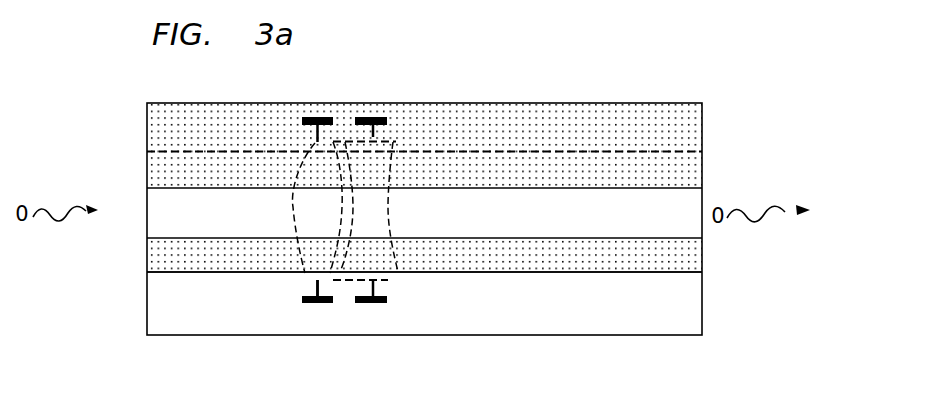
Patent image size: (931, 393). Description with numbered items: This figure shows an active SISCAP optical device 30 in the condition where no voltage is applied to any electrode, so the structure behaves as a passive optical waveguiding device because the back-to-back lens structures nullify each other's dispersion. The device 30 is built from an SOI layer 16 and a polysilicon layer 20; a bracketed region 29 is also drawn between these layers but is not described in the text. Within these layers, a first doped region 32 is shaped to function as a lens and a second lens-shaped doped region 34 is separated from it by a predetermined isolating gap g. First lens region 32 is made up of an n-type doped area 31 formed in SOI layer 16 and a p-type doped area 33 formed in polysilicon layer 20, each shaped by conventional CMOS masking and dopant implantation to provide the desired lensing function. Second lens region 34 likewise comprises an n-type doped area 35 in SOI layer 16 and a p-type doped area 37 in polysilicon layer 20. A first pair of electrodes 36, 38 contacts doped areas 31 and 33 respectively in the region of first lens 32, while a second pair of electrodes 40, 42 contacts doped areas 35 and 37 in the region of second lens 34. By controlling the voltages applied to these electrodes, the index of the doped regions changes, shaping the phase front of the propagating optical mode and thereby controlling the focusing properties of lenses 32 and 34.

The active SISCAP optical device 30 is at (617, 60).
The polysilicon layer 20 is at (150, 122).
The waveguide core region 29 is at (148, 152).
The SOI layer 16 is at (150, 300).
The electrode 38 is at (314, 117).
The electrode 42 is at (389, 117).
The first doped lens region 32 is at (300, 178).
The p-type doped area 33 is at (308, 148).
The p-type doped area 37 is at (403, 142).
The second lens-shaped doped region 34 is at (392, 168).
The electrode 36 is at (302, 304).
The electrode 40 is at (383, 304).
The n-type doped area 35 is at (387, 279).
The n-type doped area 31 is at (310, 273).
The isolating gap g is at (338, 280).